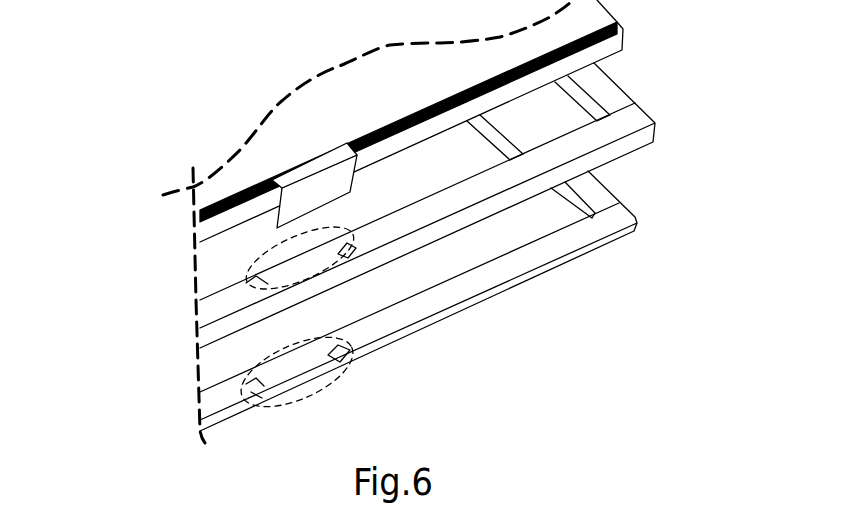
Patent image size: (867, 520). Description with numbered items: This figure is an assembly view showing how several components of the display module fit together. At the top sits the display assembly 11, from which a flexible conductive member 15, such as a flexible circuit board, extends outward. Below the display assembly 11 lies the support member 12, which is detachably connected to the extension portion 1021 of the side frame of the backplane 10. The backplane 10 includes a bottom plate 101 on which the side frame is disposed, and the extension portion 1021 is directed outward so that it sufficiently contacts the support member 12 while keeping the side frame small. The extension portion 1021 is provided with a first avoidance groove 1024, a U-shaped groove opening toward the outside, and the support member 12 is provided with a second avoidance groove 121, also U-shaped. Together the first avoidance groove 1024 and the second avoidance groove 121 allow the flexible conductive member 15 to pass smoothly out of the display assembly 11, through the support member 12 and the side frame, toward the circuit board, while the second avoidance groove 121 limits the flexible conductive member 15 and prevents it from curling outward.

The backplane 10 is at (633, 217).
The display assembly 11 is at (622, 40).
The support member 12 is at (643, 110).
The flexible conductive member 15 is at (287, 173).
The bottom plate 101 is at (505, 240).
The second avoidance groove 121 is at (273, 268).
The extension portion 1021 is at (400, 322).
The first avoidance groove 1024 is at (270, 375).